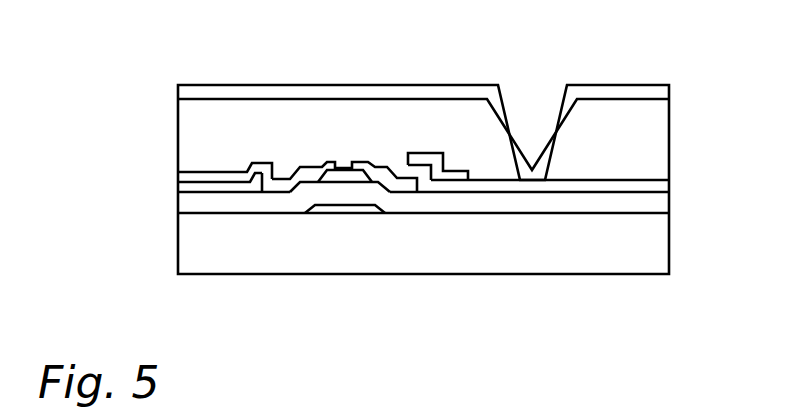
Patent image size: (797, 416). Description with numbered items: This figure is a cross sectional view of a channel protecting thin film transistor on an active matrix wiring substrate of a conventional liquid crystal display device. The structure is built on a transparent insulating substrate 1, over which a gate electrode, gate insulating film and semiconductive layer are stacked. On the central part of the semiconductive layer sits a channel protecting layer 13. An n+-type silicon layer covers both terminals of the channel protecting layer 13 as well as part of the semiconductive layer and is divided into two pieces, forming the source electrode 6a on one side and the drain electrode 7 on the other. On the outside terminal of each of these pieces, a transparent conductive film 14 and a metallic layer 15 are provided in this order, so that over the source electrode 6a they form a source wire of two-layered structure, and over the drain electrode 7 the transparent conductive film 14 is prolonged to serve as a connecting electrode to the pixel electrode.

The transparent insulating substrate 1 is at (656, 235).
The source electrode 6a is at (273, 197).
The drain electrode 7 is at (402, 197).
The channel protecting layer 13 is at (345, 163).
The transparent conductive film 14 is at (207, 197).
The metallic layer 15 is at (220, 166).